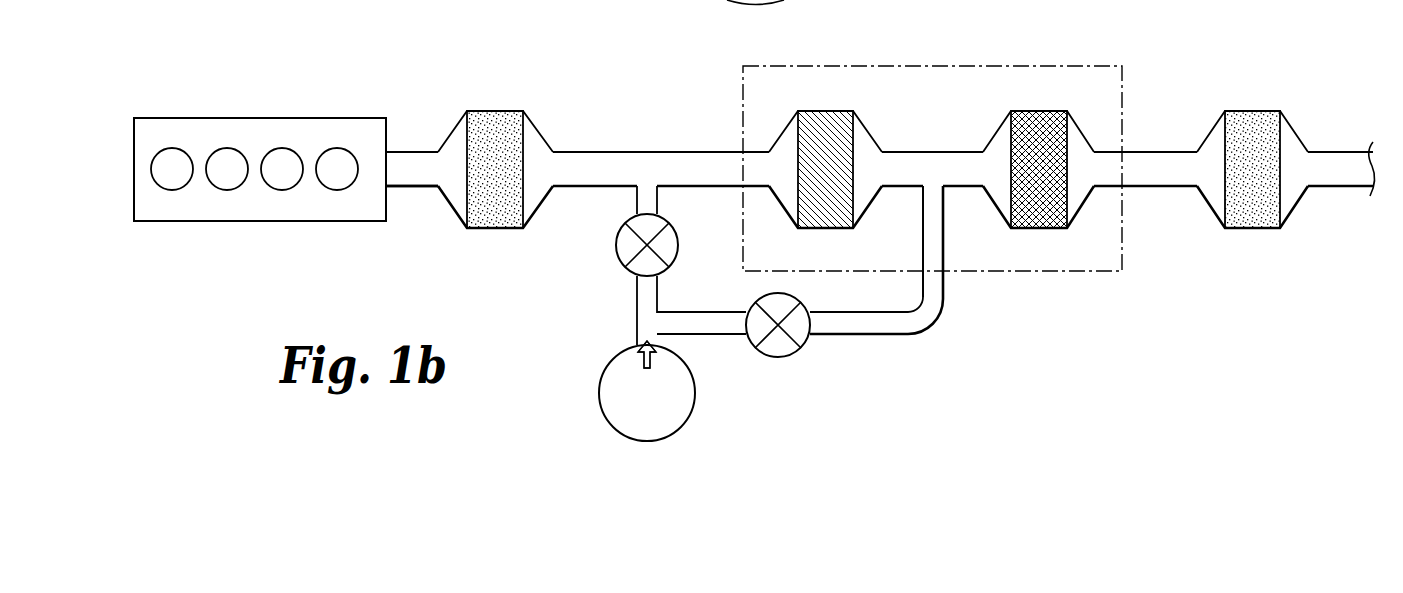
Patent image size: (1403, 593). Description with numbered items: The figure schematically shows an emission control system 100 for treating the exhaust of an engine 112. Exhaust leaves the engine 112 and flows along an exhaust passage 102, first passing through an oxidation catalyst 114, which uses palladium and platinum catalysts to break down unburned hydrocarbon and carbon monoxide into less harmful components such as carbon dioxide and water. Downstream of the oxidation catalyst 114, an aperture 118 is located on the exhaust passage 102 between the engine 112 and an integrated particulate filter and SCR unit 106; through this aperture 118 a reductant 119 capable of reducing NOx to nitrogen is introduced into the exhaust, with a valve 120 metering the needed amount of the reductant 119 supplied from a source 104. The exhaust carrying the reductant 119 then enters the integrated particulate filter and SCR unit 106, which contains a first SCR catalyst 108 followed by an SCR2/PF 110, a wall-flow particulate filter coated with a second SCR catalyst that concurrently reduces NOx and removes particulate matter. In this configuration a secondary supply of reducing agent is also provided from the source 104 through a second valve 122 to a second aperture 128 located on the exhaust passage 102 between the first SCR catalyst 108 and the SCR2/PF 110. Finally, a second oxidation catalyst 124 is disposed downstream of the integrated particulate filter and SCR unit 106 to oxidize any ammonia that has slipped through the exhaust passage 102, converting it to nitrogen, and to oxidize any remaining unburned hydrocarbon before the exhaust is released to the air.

The emission control system 100 is at (881, 410).
The exhaust passage 102 is at (416, 158).
The source 104 is at (628, 405).
The integrated particulate filter and SCR unit 106 is at (1084, 284).
The first SCR catalyst 108 is at (826, 109).
The SCR2/PF 110 is at (1040, 109).
The engine 112 is at (202, 223).
The oxidation catalyst 114 is at (495, 110).
The aperture 118 is at (647, 180).
The reductant 119 is at (634, 362).
The valve 120 is at (614, 246).
The second valve 122 is at (777, 358).
The second oxidation catalyst 124 is at (1253, 110).
The second aperture 128 is at (933, 182).